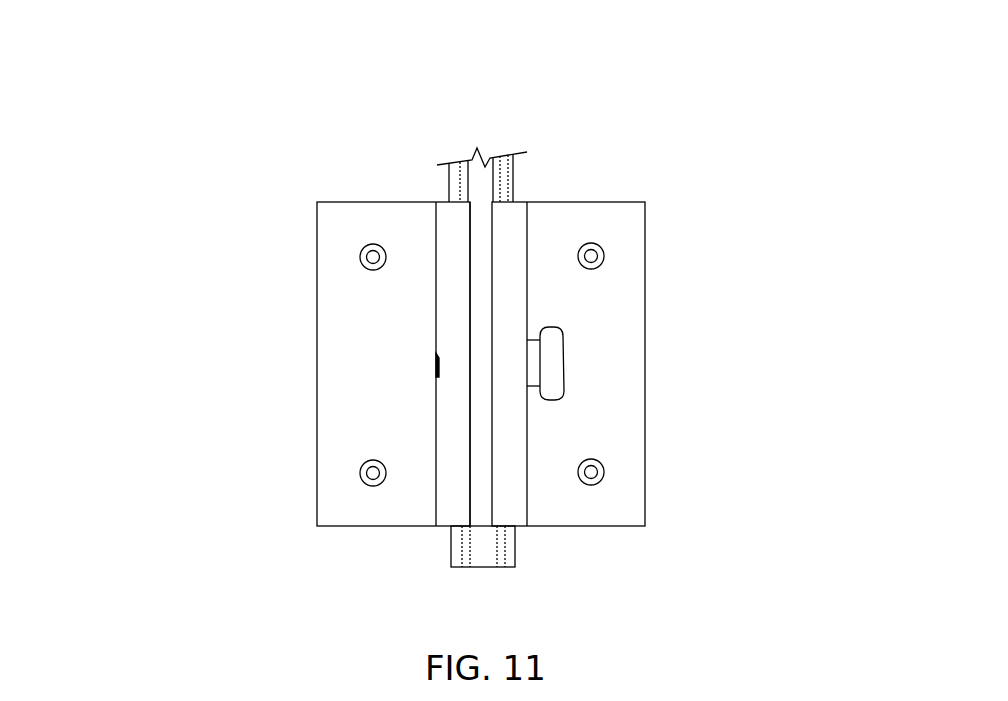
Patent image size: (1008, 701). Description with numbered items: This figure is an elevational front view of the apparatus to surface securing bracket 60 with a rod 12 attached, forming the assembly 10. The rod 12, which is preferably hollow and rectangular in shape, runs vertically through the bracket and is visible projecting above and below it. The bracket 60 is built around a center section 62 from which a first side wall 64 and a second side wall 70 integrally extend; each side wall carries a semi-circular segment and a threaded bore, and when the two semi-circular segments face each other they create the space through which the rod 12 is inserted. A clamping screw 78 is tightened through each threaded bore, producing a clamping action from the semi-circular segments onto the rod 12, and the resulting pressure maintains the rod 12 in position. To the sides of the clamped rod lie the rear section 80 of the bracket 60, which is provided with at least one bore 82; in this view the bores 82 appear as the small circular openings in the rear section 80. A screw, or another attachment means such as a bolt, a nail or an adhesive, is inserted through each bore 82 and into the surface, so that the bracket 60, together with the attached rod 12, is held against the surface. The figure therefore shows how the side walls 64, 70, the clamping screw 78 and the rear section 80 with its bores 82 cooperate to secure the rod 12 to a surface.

The hinge assembly 10 is at (461, 318).
The rod 12 is at (482, 550).
The apparatus to surface securing bracket 60 is at (478, 342).
The center section 62 is at (478, 364).
The first side wall 64 is at (510, 302).
The second side wall 70 is at (453, 417).
The clamping screw 78 is at (552, 374).
The rear section 80 is at (351, 225).
The bore 82 is at (360, 473).